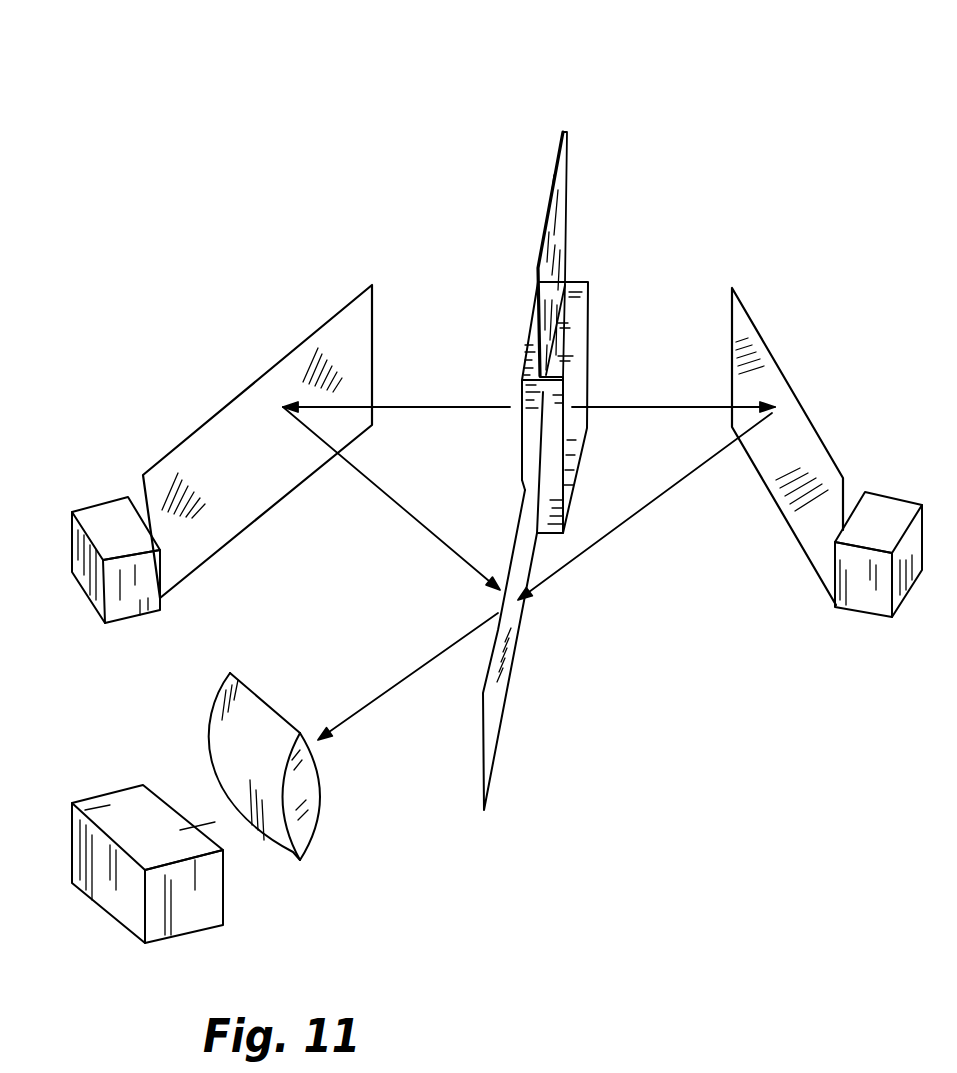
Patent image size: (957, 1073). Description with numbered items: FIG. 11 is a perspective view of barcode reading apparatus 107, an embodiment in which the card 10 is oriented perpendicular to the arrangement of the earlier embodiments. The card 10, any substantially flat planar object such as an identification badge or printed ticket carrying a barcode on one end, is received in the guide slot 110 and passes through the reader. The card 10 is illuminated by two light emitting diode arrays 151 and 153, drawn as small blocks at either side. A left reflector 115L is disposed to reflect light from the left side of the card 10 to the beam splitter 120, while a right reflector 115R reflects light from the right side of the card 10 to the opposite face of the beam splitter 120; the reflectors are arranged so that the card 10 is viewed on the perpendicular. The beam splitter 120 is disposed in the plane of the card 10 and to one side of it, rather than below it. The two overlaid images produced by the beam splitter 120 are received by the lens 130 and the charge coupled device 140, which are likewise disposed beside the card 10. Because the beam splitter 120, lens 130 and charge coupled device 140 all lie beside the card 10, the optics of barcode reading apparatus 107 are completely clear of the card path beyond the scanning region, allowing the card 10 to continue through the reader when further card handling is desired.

The barcode reading apparatus 107 is at (640, 174).
The card 10 is at (540, 260).
The guide slot 110 is at (522, 385).
The beam splitter 120 is at (505, 710).
The reflector 115L is at (262, 372).
The reflector 115R is at (770, 337).
The light emitting diode array 151 is at (118, 622).
The light emitting diode array 153 is at (877, 617).
The lens 130 is at (278, 712).
The charge coupled device 140 is at (128, 743).